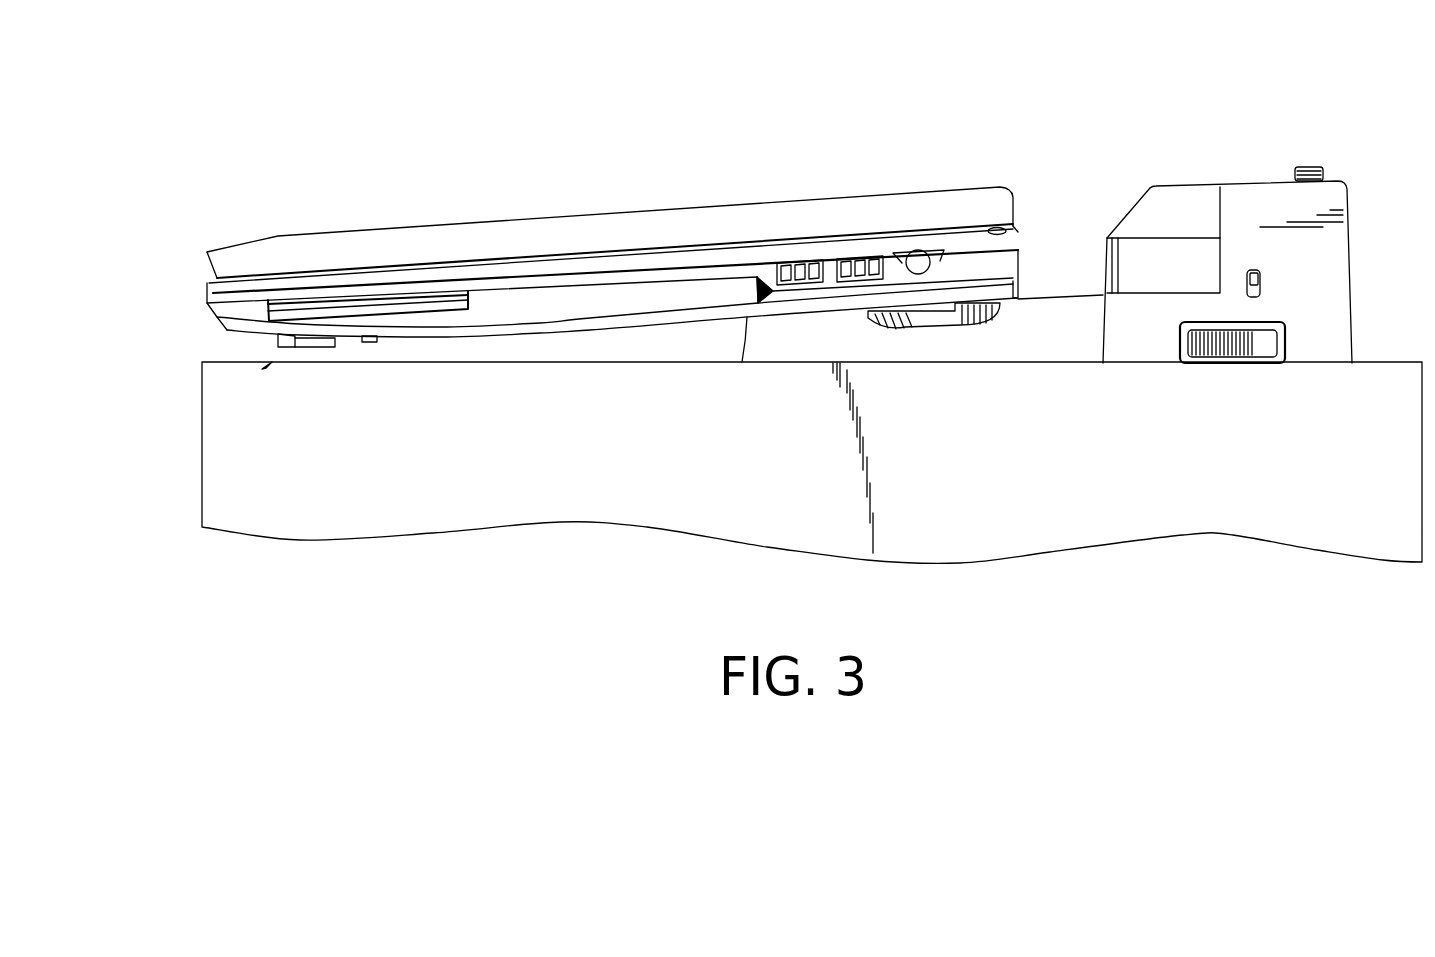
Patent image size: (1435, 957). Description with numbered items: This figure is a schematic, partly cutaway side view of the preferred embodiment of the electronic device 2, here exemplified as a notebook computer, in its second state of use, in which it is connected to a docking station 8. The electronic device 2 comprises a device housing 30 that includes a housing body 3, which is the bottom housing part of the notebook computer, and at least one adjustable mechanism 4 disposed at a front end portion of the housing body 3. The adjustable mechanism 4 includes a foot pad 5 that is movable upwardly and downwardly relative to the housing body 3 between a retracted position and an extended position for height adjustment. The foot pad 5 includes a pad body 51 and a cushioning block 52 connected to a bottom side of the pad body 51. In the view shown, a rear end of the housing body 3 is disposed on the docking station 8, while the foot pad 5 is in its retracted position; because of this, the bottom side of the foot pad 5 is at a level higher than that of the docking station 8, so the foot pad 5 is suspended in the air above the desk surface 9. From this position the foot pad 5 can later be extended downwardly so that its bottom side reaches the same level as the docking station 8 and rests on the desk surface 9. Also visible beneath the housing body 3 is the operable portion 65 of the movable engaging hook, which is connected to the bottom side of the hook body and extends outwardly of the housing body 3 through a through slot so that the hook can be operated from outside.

The electronic device 2 is at (708, 140).
The device housing 30 is at (765, 193).
The housing body 3 is at (595, 303).
The adjustable mechanism 4 is at (280, 355).
The foot pad 5 is at (263, 352).
The pad body 51 is at (300, 338).
The cushioning block 52 is at (317, 343).
The operable portion 65 is at (368, 340).
The docking station 8 is at (1063, 323).
The desk surface 9 is at (195, 356).